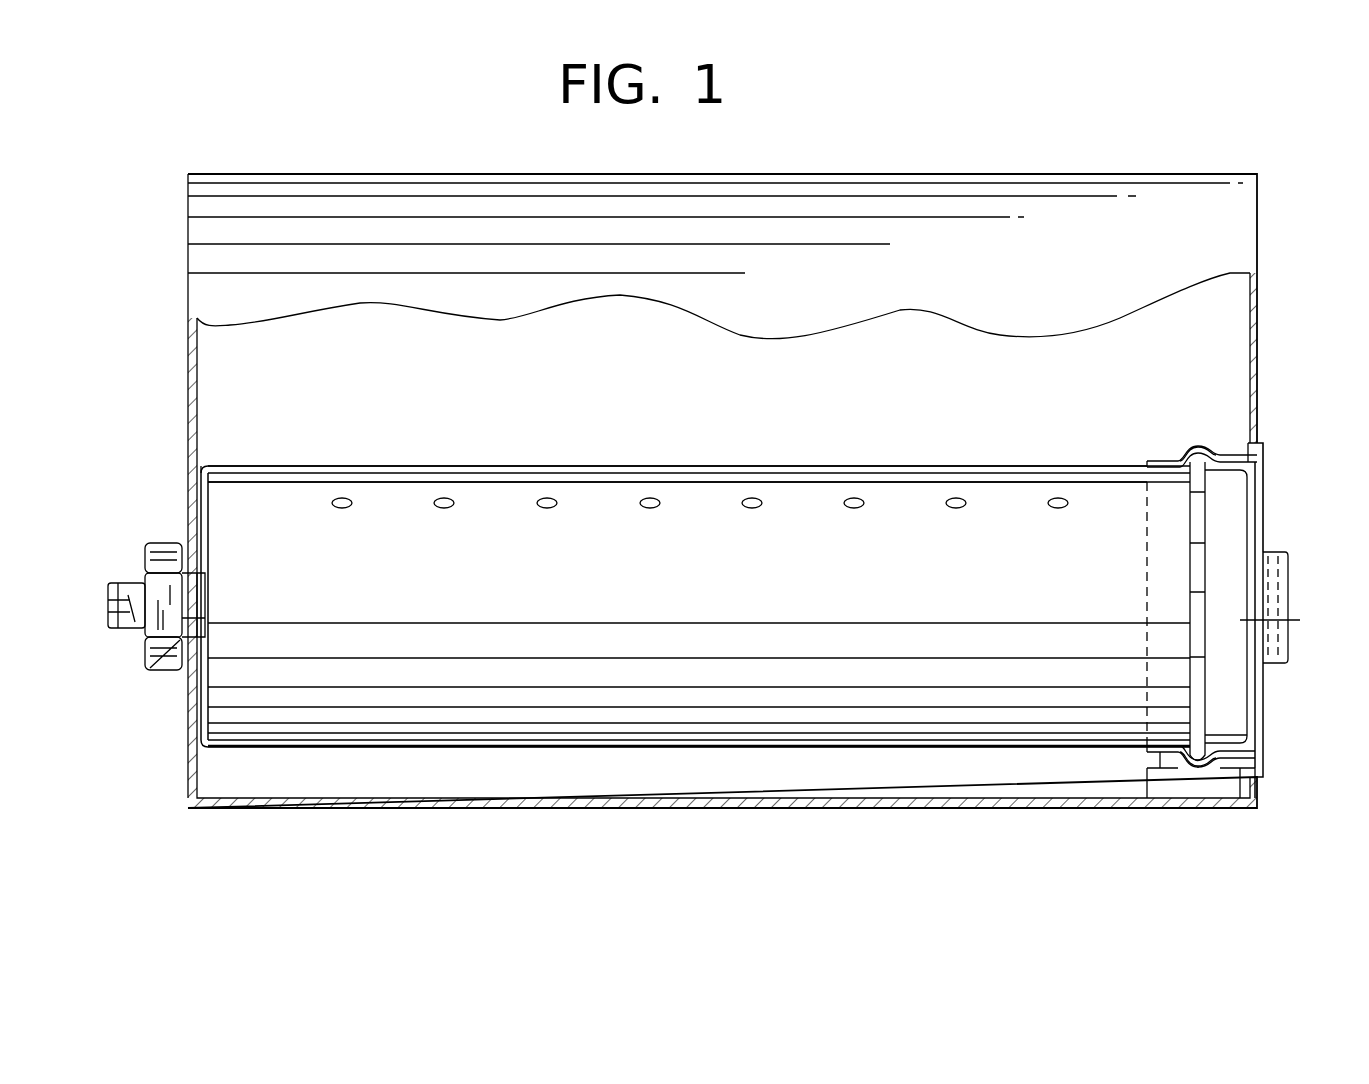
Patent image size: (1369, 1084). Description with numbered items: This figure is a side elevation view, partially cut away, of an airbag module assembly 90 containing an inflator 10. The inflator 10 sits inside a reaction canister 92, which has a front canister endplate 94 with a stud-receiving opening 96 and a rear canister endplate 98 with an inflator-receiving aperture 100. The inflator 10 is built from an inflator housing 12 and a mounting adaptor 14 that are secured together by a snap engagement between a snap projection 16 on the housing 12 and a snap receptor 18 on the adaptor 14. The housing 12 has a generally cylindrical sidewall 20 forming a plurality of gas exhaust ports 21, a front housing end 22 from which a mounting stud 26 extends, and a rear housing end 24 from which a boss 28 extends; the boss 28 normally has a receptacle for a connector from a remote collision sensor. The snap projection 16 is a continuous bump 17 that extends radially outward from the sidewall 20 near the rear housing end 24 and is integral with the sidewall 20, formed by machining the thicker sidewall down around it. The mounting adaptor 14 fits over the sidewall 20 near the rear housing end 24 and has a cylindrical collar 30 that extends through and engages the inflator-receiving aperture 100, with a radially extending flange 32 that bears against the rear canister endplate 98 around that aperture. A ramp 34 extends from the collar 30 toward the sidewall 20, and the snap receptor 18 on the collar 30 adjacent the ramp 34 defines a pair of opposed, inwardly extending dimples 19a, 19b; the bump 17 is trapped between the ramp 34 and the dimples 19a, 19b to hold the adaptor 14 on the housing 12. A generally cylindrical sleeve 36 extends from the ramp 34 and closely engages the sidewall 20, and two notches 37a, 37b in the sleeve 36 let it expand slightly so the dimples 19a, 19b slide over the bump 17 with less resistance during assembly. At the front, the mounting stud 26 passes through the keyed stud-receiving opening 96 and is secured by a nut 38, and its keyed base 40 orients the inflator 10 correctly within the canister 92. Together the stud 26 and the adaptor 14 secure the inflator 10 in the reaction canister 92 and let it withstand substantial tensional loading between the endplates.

The inflator 10 is at (458, 765).
The inflator housing 12 is at (672, 768).
The mounting adaptor 14 is at (1280, 765).
The snap projection 16 is at (1172, 592).
The continuous bump 17 is at (1198, 543).
The snap receptor 18 is at (1230, 735).
The dimple 19a is at (1243, 447).
The dimple 19b is at (1258, 737).
The cylindrical sidewall 20 is at (542, 467).
The holes 21 is at (350, 510).
The front housing end 22 is at (190, 487).
The rear housing end 24 is at (1253, 692).
The mounting stud 26 is at (130, 582).
The boss 28 is at (1285, 622).
The cylindrical collar 30 is at (1230, 767).
The radially extending flange 32 is at (1260, 437).
The ramp 34 is at (1178, 762).
The cylindrical sleeve 36 is at (1172, 753).
The notch 37a is at (1163, 460).
The notch 37b is at (1170, 752).
The nut 38 is at (165, 542).
The keyed base 40 is at (172, 642).
The airbag module assembly 90 is at (238, 852).
The reaction canister 92 is at (1280, 256).
The front canister endplate 94 is at (188, 418).
The stud-receiving opening 96 is at (195, 582).
The rear canister endplate 98 is at (1257, 330).
The inflator-receiving aperture 100 is at (1257, 505).